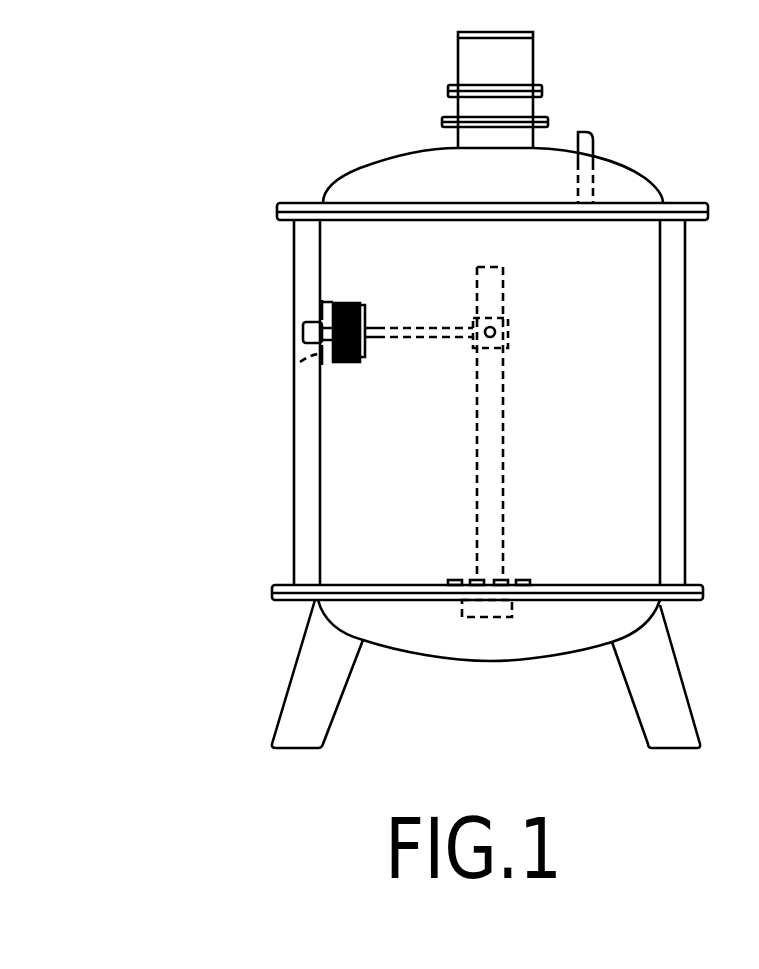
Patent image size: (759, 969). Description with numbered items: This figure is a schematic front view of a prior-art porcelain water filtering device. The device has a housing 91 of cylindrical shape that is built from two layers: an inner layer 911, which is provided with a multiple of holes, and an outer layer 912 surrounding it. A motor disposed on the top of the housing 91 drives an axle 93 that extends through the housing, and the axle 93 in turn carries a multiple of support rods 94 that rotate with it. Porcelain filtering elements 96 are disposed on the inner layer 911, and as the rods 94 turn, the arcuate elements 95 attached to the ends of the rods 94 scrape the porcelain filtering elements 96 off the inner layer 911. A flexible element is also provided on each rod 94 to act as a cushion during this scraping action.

The housing 91 is at (451, 390).
The inner layer 911 is at (323, 462).
The outer layer 912 is at (290, 500).
The axle 93 is at (508, 292).
The support rods 94 is at (415, 322).
The arcuate elements 95 is at (365, 350).
The porcelain filtering elements 96 is at (340, 364).